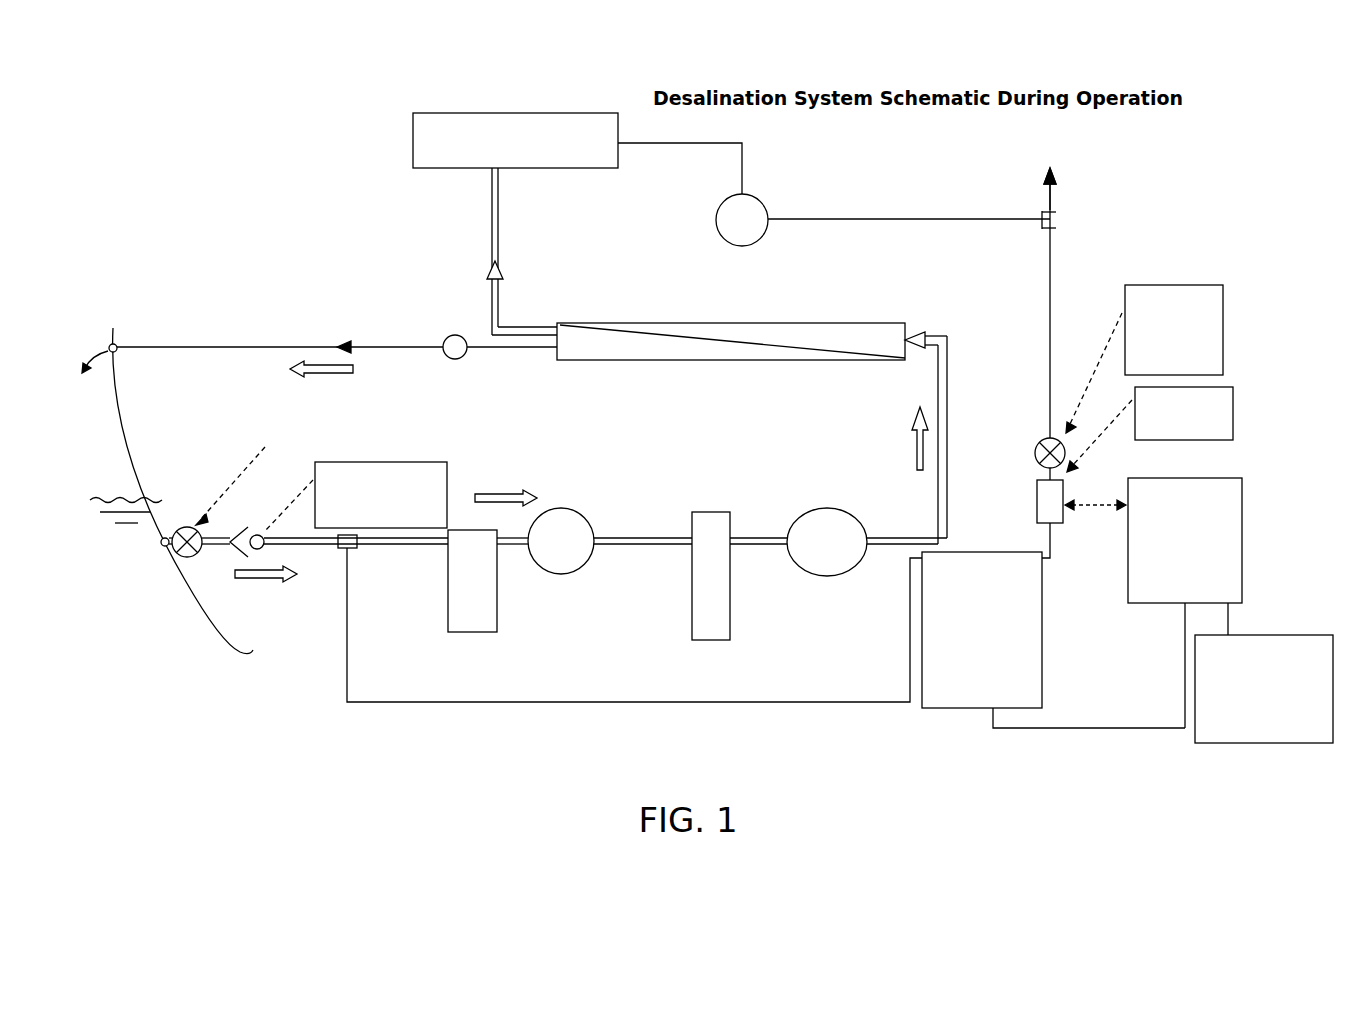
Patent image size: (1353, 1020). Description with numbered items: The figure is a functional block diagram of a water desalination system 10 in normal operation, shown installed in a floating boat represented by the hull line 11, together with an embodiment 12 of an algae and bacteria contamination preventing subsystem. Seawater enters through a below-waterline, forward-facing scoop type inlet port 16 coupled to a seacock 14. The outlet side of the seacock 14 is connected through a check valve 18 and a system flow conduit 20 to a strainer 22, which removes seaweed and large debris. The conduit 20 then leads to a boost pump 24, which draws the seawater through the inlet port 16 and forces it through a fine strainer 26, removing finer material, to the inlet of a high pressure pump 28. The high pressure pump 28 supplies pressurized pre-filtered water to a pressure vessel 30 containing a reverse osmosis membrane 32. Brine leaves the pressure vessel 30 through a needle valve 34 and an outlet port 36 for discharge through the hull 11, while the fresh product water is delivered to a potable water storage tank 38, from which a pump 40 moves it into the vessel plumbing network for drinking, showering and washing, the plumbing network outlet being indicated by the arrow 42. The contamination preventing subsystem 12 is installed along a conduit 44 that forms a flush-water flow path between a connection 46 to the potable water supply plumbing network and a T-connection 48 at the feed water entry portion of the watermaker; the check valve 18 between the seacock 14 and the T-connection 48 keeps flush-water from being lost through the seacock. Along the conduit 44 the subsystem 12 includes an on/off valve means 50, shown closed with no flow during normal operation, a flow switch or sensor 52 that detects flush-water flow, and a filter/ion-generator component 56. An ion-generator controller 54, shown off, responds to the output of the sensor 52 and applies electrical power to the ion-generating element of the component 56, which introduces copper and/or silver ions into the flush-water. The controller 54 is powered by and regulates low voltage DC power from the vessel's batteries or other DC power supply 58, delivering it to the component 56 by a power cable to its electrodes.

The water desalination system 10 is at (619, 462).
The hull line 11 is at (198, 614).
The algae and bacteria contamination preventing apparatus and subsystem 12 is at (977, 752).
The seacock 14 is at (188, 527).
The inlet port 16 is at (158, 545).
The check valve 18 is at (240, 528).
The system flow conduit 20 is at (328, 548).
The strainer 22 is at (445, 594).
The boost pump 24 is at (594, 555).
The fine strainer 26 is at (690, 586).
The high pressure pump 28 is at (826, 508).
The pressure vessel 30 is at (595, 362).
The reverse osmosis membrane 32 is at (728, 340).
The needle valve 34 is at (453, 335).
The outlet port 36 is at (115, 343).
The potable water storage tank 38 is at (411, 146).
The pump 40 is at (716, 226).
The domestic water outlet 42 is at (1052, 195).
The conduit 44 is at (1048, 332).
The connection 46 is at (1058, 223).
The T-connection 48 is at (352, 549).
The on/off valve means 50 is at (1035, 453).
The flow switch 52 is at (1036, 507).
The ion-generator controller 54 is at (1127, 535).
The filter/ion-generator component 56 is at (1043, 592).
The DC power supply 58 is at (1258, 745).